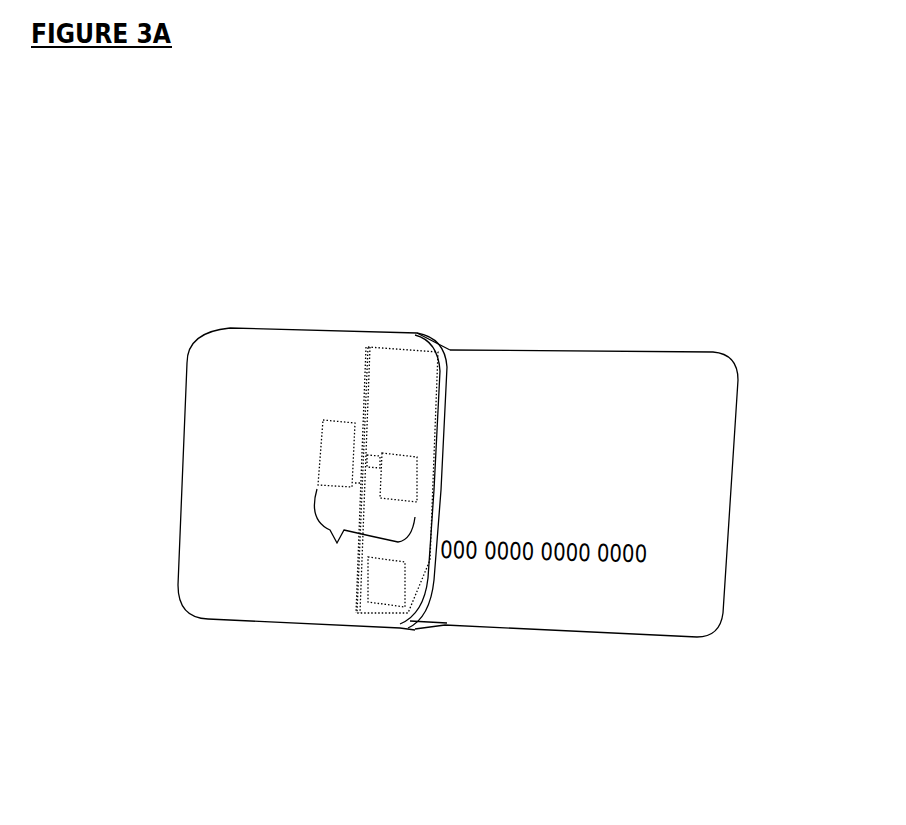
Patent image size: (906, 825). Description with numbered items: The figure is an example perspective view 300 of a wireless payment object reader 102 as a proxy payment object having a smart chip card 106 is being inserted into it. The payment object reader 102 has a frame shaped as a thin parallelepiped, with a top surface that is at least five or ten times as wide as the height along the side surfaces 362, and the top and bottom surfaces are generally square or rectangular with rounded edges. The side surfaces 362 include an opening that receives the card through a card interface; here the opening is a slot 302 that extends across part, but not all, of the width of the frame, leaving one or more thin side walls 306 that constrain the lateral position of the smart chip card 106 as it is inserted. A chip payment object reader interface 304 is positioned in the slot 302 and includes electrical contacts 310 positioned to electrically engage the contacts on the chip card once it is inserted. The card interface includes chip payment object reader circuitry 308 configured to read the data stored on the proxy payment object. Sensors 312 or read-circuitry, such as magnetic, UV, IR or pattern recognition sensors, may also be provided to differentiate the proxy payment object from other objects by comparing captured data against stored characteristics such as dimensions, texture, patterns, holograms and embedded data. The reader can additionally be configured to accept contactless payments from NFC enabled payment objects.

The perspective view 300 is at (240, 177).
The payment object reader 102 is at (344, 460).
The smart chip card 106 is at (585, 513).
The slot 302 is at (445, 470).
The chip payment object reader interface 304 is at (352, 491).
The thin side walls 306 is at (367, 385).
The chip payment object reader circuitry 308 is at (332, 463).
The electrical contacts 310 is at (386, 452).
The sensors 312 is at (387, 603).
The side surfaces 362 is at (443, 627).